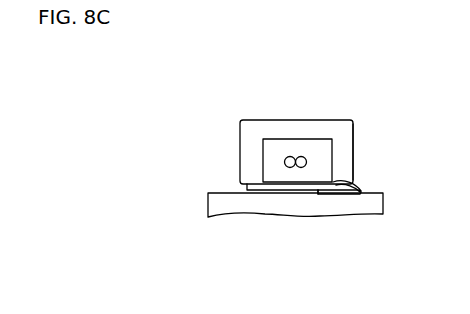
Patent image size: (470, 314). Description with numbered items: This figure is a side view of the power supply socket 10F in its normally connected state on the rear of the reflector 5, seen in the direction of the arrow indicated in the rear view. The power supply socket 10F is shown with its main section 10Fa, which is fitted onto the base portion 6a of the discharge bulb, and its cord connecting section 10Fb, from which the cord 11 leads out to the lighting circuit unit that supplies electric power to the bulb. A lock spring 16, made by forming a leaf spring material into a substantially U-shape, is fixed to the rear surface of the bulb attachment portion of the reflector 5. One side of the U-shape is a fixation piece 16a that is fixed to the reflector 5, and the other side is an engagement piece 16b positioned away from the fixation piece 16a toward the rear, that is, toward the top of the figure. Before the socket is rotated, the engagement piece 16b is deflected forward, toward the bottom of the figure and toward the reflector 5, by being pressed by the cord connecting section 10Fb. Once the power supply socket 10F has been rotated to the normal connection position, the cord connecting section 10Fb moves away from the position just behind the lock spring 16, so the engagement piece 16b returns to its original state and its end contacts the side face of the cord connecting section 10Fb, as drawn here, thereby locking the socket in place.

The reflector 5 is at (208, 205).
The base portion 6a is at (255, 191).
The power supply socket 10F is at (314, 120).
The main section 10Fa is at (353, 128).
The cord connecting section 10Fb is at (262, 152).
The cord 11 is at (289, 156).
The lock spring 16 is at (362, 191).
The fixation piece 16a is at (330, 194).
The engagement piece 16b is at (337, 180).